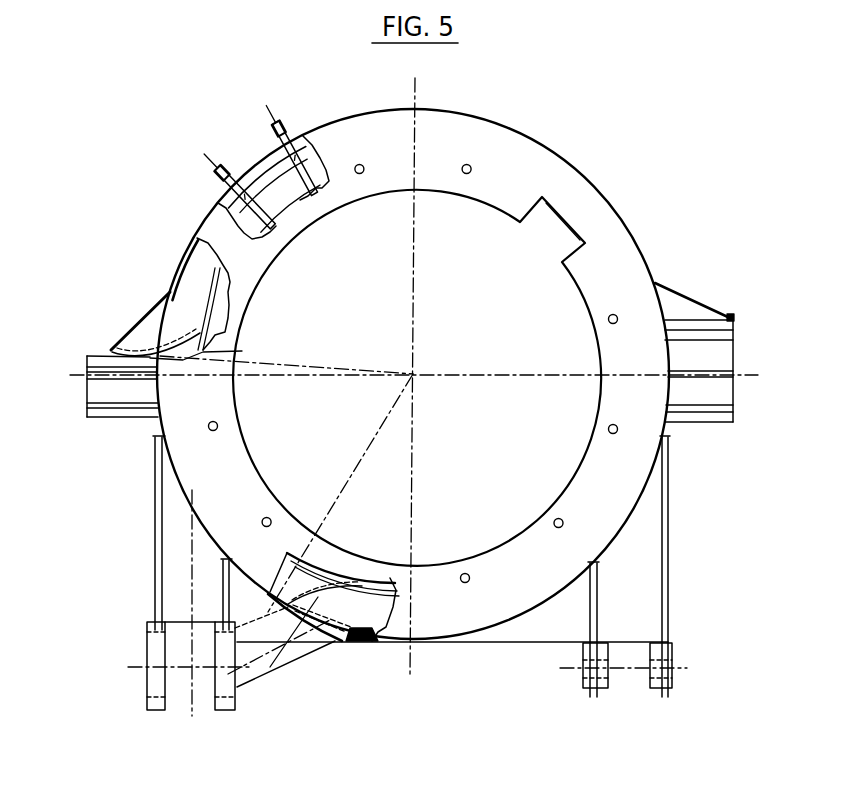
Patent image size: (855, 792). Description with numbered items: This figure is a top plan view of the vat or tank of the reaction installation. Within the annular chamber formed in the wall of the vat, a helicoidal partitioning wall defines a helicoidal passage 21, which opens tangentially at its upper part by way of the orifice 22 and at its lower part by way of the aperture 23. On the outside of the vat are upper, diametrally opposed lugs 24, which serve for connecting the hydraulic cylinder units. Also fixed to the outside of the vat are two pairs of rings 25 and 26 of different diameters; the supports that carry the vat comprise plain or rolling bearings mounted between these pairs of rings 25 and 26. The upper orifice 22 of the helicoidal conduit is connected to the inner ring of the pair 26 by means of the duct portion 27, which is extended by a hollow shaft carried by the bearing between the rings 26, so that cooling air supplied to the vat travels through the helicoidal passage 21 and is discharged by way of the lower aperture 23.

The helicoidal passage 21 is at (267, 177).
The orifice 22 is at (323, 610).
The aperture 23 is at (165, 302).
The lugs 24 is at (697, 337).
The pair of rings 25 is at (656, 684).
The pair of rings 26 is at (152, 703).
The duct portion 27 is at (283, 652).